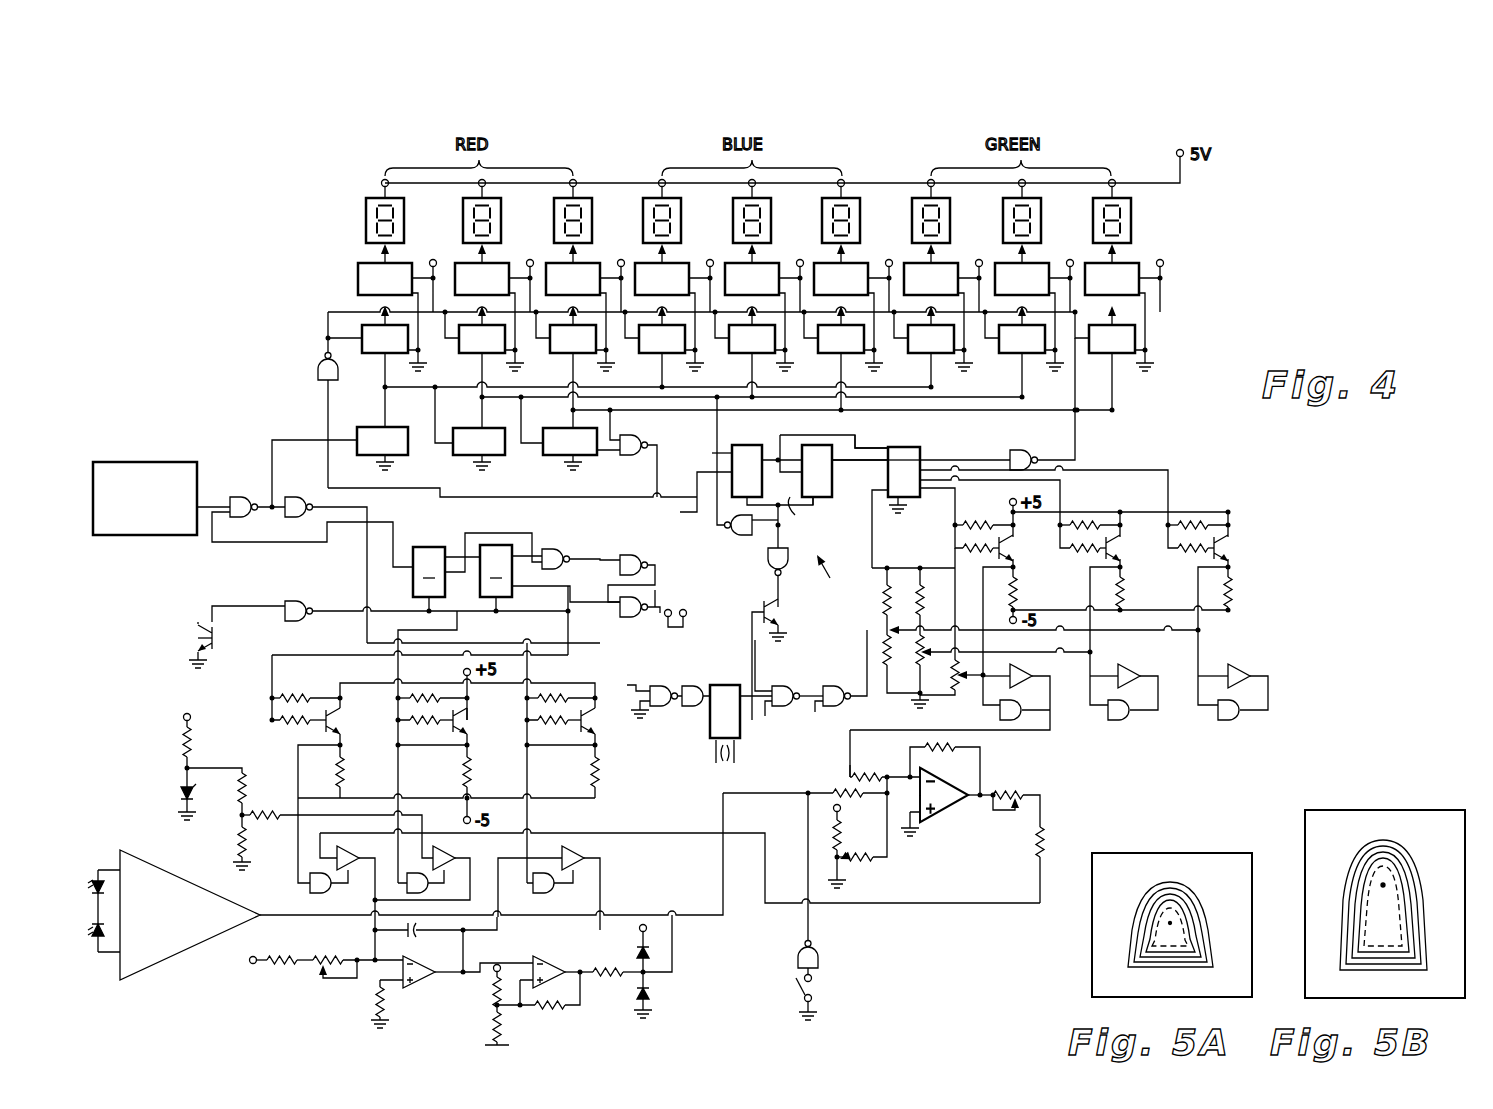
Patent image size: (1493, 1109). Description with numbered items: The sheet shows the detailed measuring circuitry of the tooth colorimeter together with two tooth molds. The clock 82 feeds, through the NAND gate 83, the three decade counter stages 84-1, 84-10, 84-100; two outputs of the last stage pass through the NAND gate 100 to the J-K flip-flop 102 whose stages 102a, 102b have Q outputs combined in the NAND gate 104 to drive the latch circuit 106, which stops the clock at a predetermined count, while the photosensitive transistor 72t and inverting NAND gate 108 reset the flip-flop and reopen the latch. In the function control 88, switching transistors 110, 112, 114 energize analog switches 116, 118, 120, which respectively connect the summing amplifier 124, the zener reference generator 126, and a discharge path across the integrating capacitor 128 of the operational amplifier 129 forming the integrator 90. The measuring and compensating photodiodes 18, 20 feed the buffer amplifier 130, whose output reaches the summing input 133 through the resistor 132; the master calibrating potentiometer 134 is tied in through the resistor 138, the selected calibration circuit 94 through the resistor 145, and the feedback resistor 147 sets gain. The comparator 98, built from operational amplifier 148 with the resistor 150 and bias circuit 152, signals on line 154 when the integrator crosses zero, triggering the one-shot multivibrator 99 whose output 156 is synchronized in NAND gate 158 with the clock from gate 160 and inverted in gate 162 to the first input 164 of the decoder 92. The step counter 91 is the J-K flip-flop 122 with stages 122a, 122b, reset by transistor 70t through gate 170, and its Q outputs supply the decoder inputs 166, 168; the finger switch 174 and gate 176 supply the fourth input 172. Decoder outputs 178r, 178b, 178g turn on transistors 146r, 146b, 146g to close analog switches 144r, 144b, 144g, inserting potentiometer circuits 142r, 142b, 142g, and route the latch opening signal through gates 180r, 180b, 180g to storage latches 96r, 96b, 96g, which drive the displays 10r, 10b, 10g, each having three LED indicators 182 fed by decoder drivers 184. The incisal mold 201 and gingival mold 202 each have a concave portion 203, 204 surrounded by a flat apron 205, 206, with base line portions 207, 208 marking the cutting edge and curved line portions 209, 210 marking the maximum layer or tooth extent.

In FIG. 4, the digital display 10r is at (518, 178).
In FIG. 4, the digital display 10b is at (795, 178).
In FIG. 4, the digital display 10g is at (1070, 178).
In FIG. 4, the light emitting diode indicator 182 is at (364, 215).
In FIG. 4, the decoder driver 184 is at (358, 268).
In FIG. 4, the storage latch 96r is at (350, 326).
In FIG. 4, the storage latch 96b is at (870, 352).
In FIG. 4, the storage latch 96g is at (1185, 348).
In FIG. 4, the inverting NAND gate 180r is at (316, 370).
In FIG. 4, the inverting NAND gate 180b is at (740, 536).
In FIG. 4, the inverting NAND gate 180g is at (1040, 437).
In FIG. 4, the clock signal generator 82 is at (165, 462).
In FIG. 4, the NAND gate 83 is at (242, 497).
In FIG. 4, the inverting NAND gate 160 is at (302, 497).
In FIG. 4, the decade counter stage 84-1 is at (400, 456).
In FIG. 4, the decade counter stage 84-10 is at (498, 456).
In FIG. 4, the decade counter stage 84-100 is at (592, 456).
In FIG. 4, the NAND gate 100 is at (648, 437).
In FIG. 4, the J-K flip-flop 122 is at (755, 434).
In FIG. 4, the flip-flop stage 122a is at (706, 452).
In FIG. 4, the flip-flop stage 122b is at (796, 515).
In FIG. 4, the decoder third input 168 is at (868, 462).
In FIG. 4, the decoder second input 166 is at (920, 447).
In FIG. 4, the decoder 92 is at (920, 460).
In FIG. 4, the decoder first input 164 is at (895, 507).
In FIG. 4, the decoder fourth input 172 is at (818, 499).
In FIG. 4, the decoder output 178r is at (946, 486).
In FIG. 4, the decoder output 178b is at (1062, 490).
In FIG. 4, the decoder output 178g is at (1150, 468).
In FIG. 4, the transistor 146r is at (1015, 552).
In FIG. 4, the transistor 146b is at (1122, 552).
In FIG. 4, the transistor 146g is at (1232, 555).
In FIG. 4, the calibration circuit 94 is at (922, 564).
In FIG. 4, the calibration potentiometer circuit 142g is at (889, 630).
In FIG. 4, the calibration potentiometer circuit 142b is at (921, 652).
In FIG. 4, the calibration potentiometer circuit 142r is at (965, 680).
In FIG. 4, the analog switch 144r is at (1030, 720).
In FIG. 4, the analog switch 144b is at (1140, 720).
In FIG. 4, the analog switch 144g is at (1258, 690).
In FIG. 4, the inverting NAND gate 170 is at (768, 572).
In FIG. 4, the photosensitive transistor 70t is at (758, 608).
In FIG. 4, the step counter 91 is at (829, 577).
In FIG. 4, the J-K flip-flop 102 is at (450, 540).
In FIG. 4, the flip-flop stage 102a is at (413, 588).
In FIG. 4, the flip-flop stage 102b is at (505, 597).
In FIG. 4, the NAND gate 104 is at (548, 549).
In FIG. 4, the latch circuit 106 is at (628, 553).
In FIG. 4, the inverting NAND gate 108 is at (296, 600).
In FIG. 4, the photosensitive transistor 72t is at (212, 637).
In FIG. 4, the function control 88 is at (265, 705).
In FIG. 4, the switching transistor 110 is at (336, 722).
In FIG. 4, the switching transistor 112 is at (463, 722).
In FIG. 4, the switching transistor 114 is at (585, 728).
In FIG. 4, the zener diode reference voltage generator 126 is at (203, 752).
In FIG. 4, the analog switch 116 is at (306, 846).
In FIG. 4, the analog switch 118 is at (445, 873).
In FIG. 4, the analog switch 120 is at (590, 876).
In FIG. 4, the buffer amplifier 130 is at (178, 877).
In FIG. 4, the compensating photodiode 20 is at (98, 880).
In FIG. 4, the measuring photosensitive diode 18 is at (98, 940).
In FIG. 4, the integrating capacitor 128 is at (372, 930).
In FIG. 4, the integrator 90 is at (352, 980).
In FIG. 4, the operational amplifier 129 is at (388, 1003).
In FIG. 4, the operational amplifier 148 is at (548, 958).
In FIG. 4, the bias potential circuit 152 is at (488, 1002).
In FIG. 4, the resistor 150 is at (545, 1008).
In FIG. 4, the comparator 98 is at (570, 1010).
In FIG. 4, the line 154 is at (672, 950).
In FIG. 4, the inverting NAND gate 176 is at (820, 958).
In FIG. 4, the finger control switch 174 is at (818, 985).
In FIG. 4, the one-shot multivibrator 99 is at (742, 733).
In FIG. 4, the NAND gate 158 is at (795, 685).
In FIG. 4, the one-shot output 156 is at (767, 712).
In FIG. 4, the inverting NAND gate 162 is at (820, 708).
In FIG. 4, the resistor 145 is at (852, 765).
In FIG. 4, the summing input 133 is at (868, 772).
In FIG. 4, the resistor 132 is at (838, 788).
In FIG. 4, the feedback resistor 147 is at (955, 747).
In FIG. 4, the summing amplifier 124 is at (962, 805).
In FIG. 4, the resistor 138 is at (856, 829).
In FIG. 4, the master calibrating potentiometer 134 is at (843, 860).
In FIG. 5A, the incisal mold 201 is at (1178, 852).
In FIG. 5A, the curved line portion 209 is at (1148, 888).
In FIG. 5A, the concave portion 203 is at (1150, 923).
In FIG. 5A, the apron 205 is at (1102, 964).
In FIG. 5A, the base line portion 207 is at (1148, 967).
In FIG. 5B, the gingival mold 202 is at (1402, 808).
In FIG. 5B, the curved line portion 210 is at (1357, 848).
In FIG. 5B, the concave portion 204 is at (1365, 913).
In FIG. 5B, the apron 206 is at (1312, 965).
In FIG. 5B, the base line portion 208 is at (1360, 968).